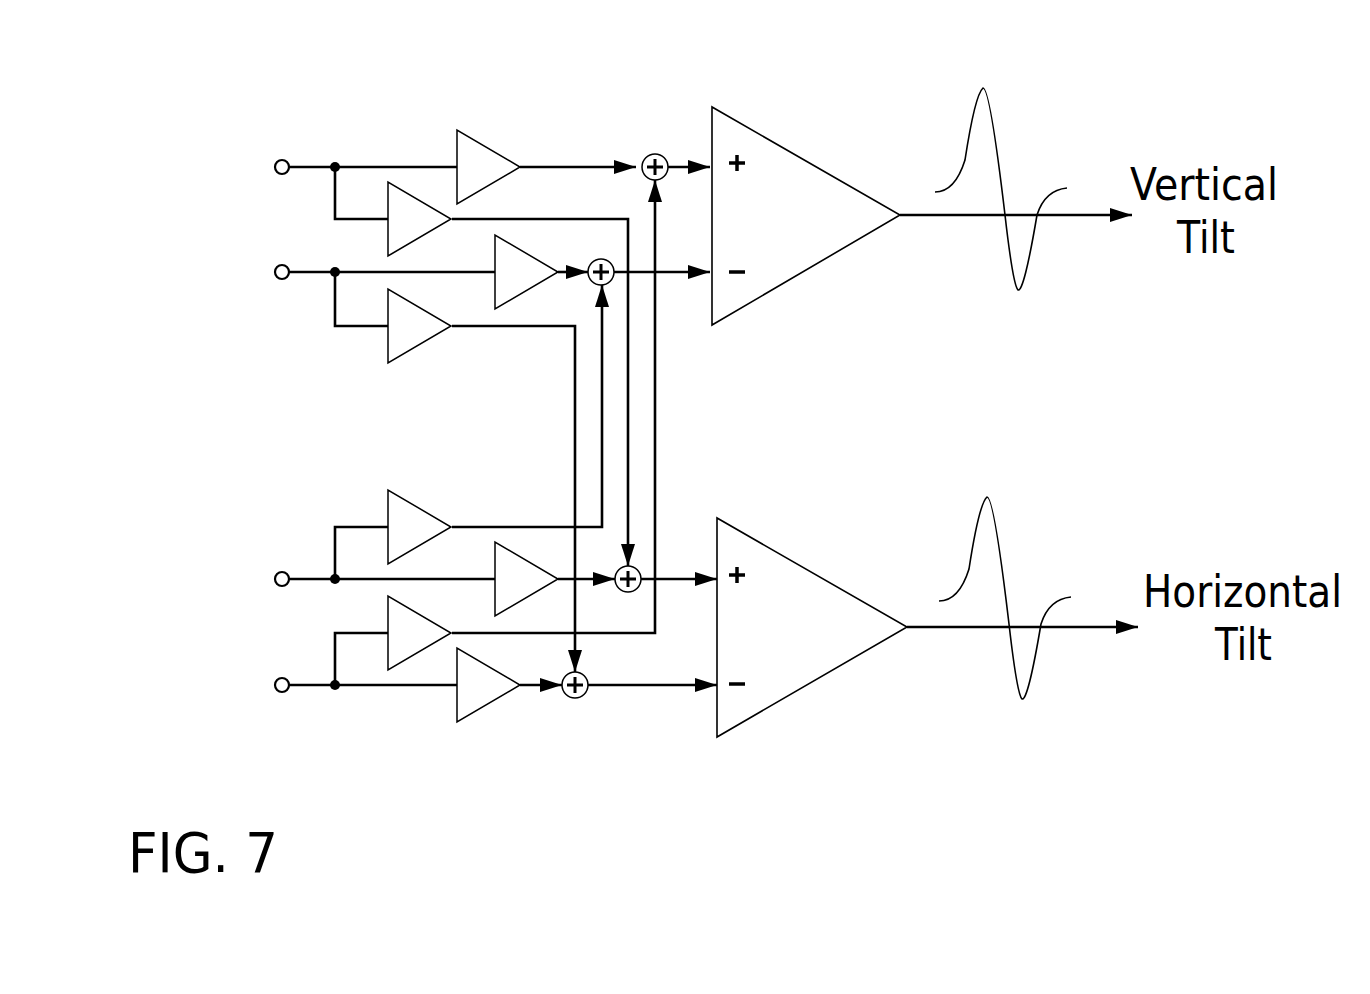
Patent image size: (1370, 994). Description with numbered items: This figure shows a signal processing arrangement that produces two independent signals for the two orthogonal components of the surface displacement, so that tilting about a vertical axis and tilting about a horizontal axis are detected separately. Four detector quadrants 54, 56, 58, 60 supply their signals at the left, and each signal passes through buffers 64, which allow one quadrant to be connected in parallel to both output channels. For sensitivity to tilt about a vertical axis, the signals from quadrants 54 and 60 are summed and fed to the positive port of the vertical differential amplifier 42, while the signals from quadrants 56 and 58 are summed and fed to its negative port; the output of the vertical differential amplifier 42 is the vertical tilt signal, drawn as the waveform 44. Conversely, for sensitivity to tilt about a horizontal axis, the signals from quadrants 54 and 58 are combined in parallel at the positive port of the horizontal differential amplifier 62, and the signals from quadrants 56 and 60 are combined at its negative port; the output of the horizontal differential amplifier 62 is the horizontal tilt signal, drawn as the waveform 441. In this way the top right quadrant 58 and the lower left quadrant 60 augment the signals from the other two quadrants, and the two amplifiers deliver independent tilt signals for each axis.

The quadrant 54 is at (275, 167).
The quadrant 56 is at (275, 272).
The top right quadrant 58 is at (275, 579).
The lower left quadrant 60 is at (275, 685).
The buffers 64 is at (490, 152).
The vertical differential amplifier 42 is at (812, 163).
The vertical tilt output waveform 44 is at (997, 147).
The horizontal differential amplifier 62 is at (788, 562).
The horizontal tilt output waveform 441 is at (1002, 547).